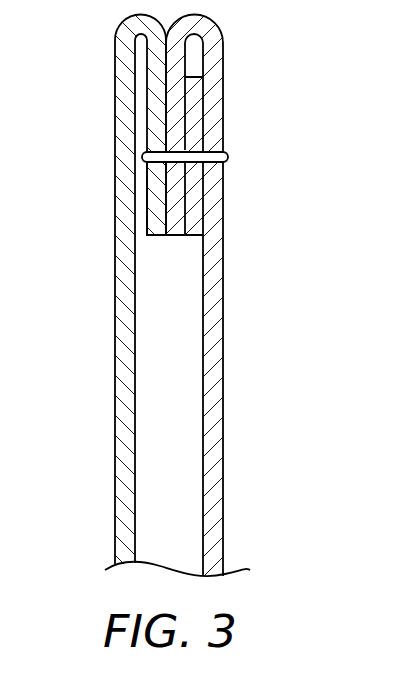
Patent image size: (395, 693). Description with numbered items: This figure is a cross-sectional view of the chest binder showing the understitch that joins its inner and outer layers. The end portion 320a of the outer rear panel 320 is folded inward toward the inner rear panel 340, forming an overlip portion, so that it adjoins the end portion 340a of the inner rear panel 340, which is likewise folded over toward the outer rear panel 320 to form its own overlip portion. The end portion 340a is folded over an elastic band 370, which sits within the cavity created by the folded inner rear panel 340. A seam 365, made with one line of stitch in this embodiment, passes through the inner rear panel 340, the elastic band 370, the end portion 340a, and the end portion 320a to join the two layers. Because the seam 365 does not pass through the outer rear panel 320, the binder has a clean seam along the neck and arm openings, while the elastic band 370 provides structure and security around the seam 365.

The outer rear panel 320 is at (115, 350).
The end portion of outer rear panel 320a is at (157, 200).
The inner rear panel 340 is at (223, 350).
The end portion of inner rear panel 340a is at (177, 200).
The seam 365 is at (228, 157).
The elastic band 370 is at (202, 100).